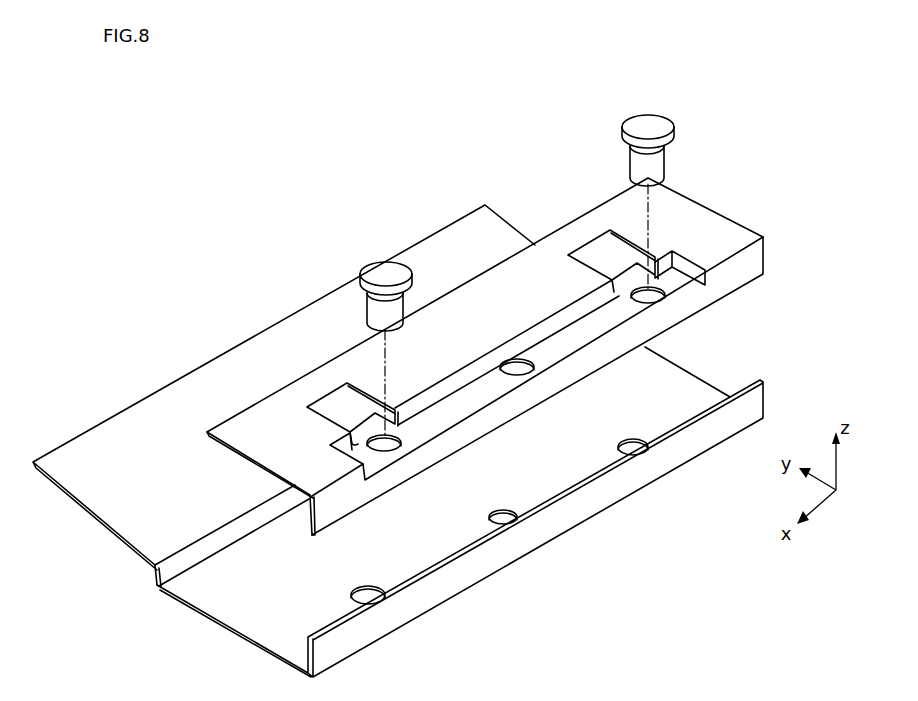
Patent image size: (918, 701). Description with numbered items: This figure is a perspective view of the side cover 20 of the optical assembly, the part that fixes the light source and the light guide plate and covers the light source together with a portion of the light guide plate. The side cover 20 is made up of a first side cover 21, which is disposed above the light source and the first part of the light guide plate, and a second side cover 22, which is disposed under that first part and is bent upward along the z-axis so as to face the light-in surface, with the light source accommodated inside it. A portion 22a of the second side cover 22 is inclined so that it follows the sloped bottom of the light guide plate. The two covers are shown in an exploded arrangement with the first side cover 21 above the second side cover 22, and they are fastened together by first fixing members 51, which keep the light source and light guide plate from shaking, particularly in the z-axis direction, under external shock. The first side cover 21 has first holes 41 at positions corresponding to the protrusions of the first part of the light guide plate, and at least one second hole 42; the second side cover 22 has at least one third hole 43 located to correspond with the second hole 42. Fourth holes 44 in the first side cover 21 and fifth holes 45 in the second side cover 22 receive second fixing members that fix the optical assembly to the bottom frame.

The side cover 20 is at (262, 368).
The first side cover 21 is at (442, 305).
The second side cover 22 is at (480, 567).
The portion of the second side cover 22a is at (107, 420).
The first hole 41 is at (336, 394).
The second hole 42 is at (400, 448).
The third hole 43 is at (360, 590).
The fourth hole 44 is at (515, 364).
The fifth hole 45 is at (497, 513).
The first fixing member 51 is at (384, 265).